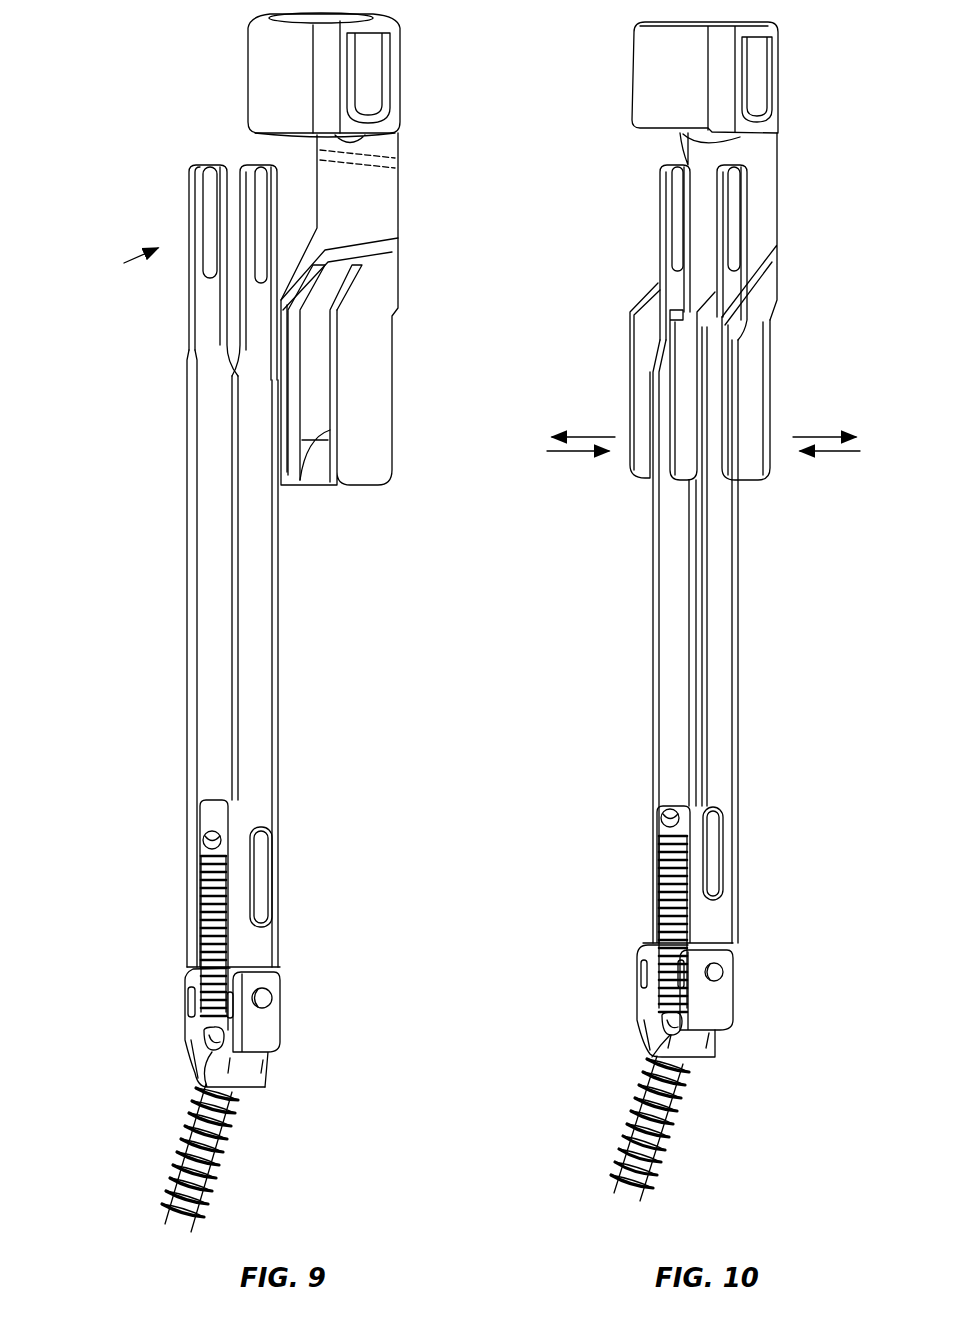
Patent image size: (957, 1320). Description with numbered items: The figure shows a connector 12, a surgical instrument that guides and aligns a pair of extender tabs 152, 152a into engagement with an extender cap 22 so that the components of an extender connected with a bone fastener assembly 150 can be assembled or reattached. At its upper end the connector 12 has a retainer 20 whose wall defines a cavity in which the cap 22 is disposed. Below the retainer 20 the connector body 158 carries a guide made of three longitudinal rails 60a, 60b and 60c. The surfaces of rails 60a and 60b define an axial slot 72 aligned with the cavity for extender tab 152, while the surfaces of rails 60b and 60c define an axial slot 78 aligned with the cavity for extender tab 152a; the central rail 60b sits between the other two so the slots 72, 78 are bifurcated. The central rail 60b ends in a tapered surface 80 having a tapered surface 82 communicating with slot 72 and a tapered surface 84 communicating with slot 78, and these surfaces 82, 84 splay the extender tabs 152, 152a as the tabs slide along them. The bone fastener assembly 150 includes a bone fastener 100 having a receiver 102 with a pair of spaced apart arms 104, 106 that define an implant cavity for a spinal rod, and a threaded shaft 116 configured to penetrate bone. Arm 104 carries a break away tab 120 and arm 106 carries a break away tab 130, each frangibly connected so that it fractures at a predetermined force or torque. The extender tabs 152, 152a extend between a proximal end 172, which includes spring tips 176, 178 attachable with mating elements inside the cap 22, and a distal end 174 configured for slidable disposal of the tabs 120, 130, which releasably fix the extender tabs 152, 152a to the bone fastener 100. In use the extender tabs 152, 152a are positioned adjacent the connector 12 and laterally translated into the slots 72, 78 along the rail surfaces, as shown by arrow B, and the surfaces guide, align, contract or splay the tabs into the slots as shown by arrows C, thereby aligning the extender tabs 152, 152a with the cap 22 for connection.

In FIG. 9, the connector 12 is at (450, 67).
In FIG. 10, the connector 12 is at (829, 67).
In FIG. 9, the retainer 20 is at (270, 57).
In FIG. 10, the retainer 20 is at (705, 82).
In FIG. 9, the extender cap 22 is at (388, 132).
In FIG. 10, the extender cap 22 is at (728, 229).
In FIG. 9, the housing 158 is at (445, 314).
In FIG. 9, the proximal end 172 is at (166, 187).
In FIG. 9, the spring tip 176 is at (197, 166).
In FIG. 9, the spring tip 178 is at (220, 165).
In FIG. 9, the axial slot 72 is at (293, 500).
In FIG. 10, the axial slot 72 is at (650, 474).
In FIG. 9, the axial slot 78 is at (334, 496).
In FIG. 10, the axial slot 78 is at (722, 492).
In FIG. 9, the tapered surface 80 is at (318, 492).
In FIG. 10, the surface 82 is at (667, 478).
In FIG. 10, the surface 84 is at (693, 482).
In FIG. 10, the longitudinal rail 60a is at (636, 372).
In FIG. 10, the longitudinal rail 60b is at (677, 414).
In FIG. 10, the longitudinal rail 60c is at (722, 388).
In FIG. 9, the extender tab 152 is at (205, 633).
In FIG. 10, the extender tab 152 is at (665, 637).
In FIG. 9, the extender tab 152a is at (262, 665).
In FIG. 10, the extender tab 152a is at (736, 660).
In FIG. 9, the bone fastener assembly 150 is at (111, 1005).
In FIG. 10, the bone fastener assembly 150 is at (576, 980).
In FIG. 9, the break away tab 120 is at (207, 953).
In FIG. 9, the distal end 174 is at (203, 967).
In FIG. 9, the break away tab 130 is at (243, 935).
In FIG. 9, the arm 104 is at (185, 1018).
In FIG. 9, the arm 106 is at (284, 1016).
In FIG. 9, the receiver 102 is at (258, 1030).
In FIG. 10, the receiver 102 is at (717, 998).
In FIG. 9, the bone fastener 100 is at (268, 1133).
In FIG. 10, the bone fastener 100 is at (725, 1104).
In FIG. 9, the threaded shaft 116 is at (218, 1167).
In FIG. 10, the threaded shaft 116 is at (670, 1140).
In FIG. 9, the arrow B is at (130, 261).
In FIG. 10, the arrows C is at (703, 432).